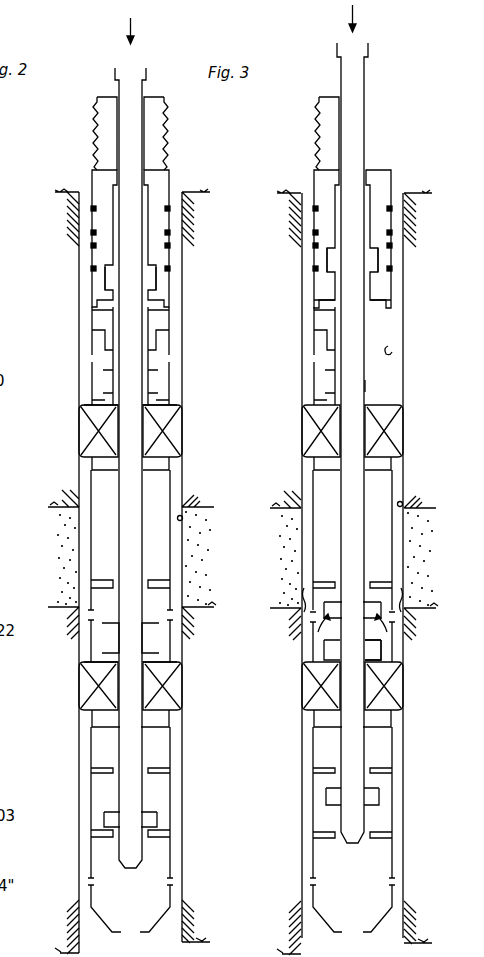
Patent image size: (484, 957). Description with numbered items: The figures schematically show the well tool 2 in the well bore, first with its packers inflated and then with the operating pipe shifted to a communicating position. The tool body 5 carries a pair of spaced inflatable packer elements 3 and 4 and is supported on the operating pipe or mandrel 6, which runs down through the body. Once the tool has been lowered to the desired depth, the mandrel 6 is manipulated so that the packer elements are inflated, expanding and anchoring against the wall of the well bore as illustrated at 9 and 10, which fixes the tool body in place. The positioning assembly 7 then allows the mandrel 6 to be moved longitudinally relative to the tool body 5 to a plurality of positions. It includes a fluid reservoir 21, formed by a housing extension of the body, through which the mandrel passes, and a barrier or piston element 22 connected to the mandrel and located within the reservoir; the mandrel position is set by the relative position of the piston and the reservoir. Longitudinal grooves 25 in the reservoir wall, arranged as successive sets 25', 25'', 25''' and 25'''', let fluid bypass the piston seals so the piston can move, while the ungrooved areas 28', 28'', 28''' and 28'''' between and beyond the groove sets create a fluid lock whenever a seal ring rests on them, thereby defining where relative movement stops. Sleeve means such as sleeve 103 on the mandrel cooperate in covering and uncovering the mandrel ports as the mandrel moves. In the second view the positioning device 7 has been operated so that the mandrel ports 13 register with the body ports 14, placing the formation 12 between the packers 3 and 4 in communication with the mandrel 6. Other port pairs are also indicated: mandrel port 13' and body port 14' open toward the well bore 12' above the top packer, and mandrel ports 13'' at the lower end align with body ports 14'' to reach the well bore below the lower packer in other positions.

In FIG. 3, the well tool 2 is at (394, 302).
In FIG. 2, the inflatable packer element 3 is at (175, 430).
In FIG. 3, the inflatable packer element 3 is at (398, 430).
In FIG. 2, the inflatable packer element 4 is at (177, 697).
In FIG. 3, the inflatable packer element 4 is at (400, 693).
In FIG. 2, the tool body 5 is at (172, 757).
In FIG. 2, the operating pipe or mandrel 6 is at (133, 507).
In FIG. 3, the operating pipe or mandrel 6 is at (353, 500).
In FIG. 3, the positioning assembly 7 is at (376, 203).
In FIG. 2, the inflated packer position 9 is at (182, 408).
In FIG. 2, the inflated packer position 10 is at (183, 663).
In FIG. 2, the formation 12 is at (216, 505).
In FIG. 3, the formation 12 is at (435, 498).
In FIG. 2, the well bore above top packer 12' is at (188, 356).
In FIG. 3, the well bore above top packer 12' is at (441, 356).
In FIG. 3, the mandrel port 13 is at (402, 654).
In FIG. 3, the mandrel port 13' is at (406, 392).
In FIG. 2, the mandrel port 13'' is at (169, 824).
In FIG. 3, the body port 14 is at (385, 614).
In FIG. 3, the body port 14' is at (415, 334).
In FIG. 2, the body port 14'' is at (157, 905).
In FIG. 3, the fluid reservoir 21 is at (380, 220).
In FIG. 2, the piston element 22 is at (130, 278).
In FIG. 3, the piston element 22 is at (352, 260).
In FIG. 2, the grooves 25 is at (159, 237).
In FIG. 3, the grooves 25 is at (381, 239).
In FIG. 2, the first set of longitudinally extending grooves 25' is at (200, 275).
In FIG. 2, the second set of longitudinally extending grooves 25'' is at (201, 253).
In FIG. 2, the grooves 25''' is at (204, 233).
In FIG. 2, the grooves 25'''' is at (205, 213).
In FIG. 2, the first ungrooved area 28' is at (49, 271).
In FIG. 2, the unslotted area 28'' is at (48, 246).
In FIG. 2, the unslotted area 28''' is at (48, 231).
In FIG. 2, the ungrooved areas 28'''' is at (48, 209).
In FIG. 2, the sleeve means 103 is at (155, 815).